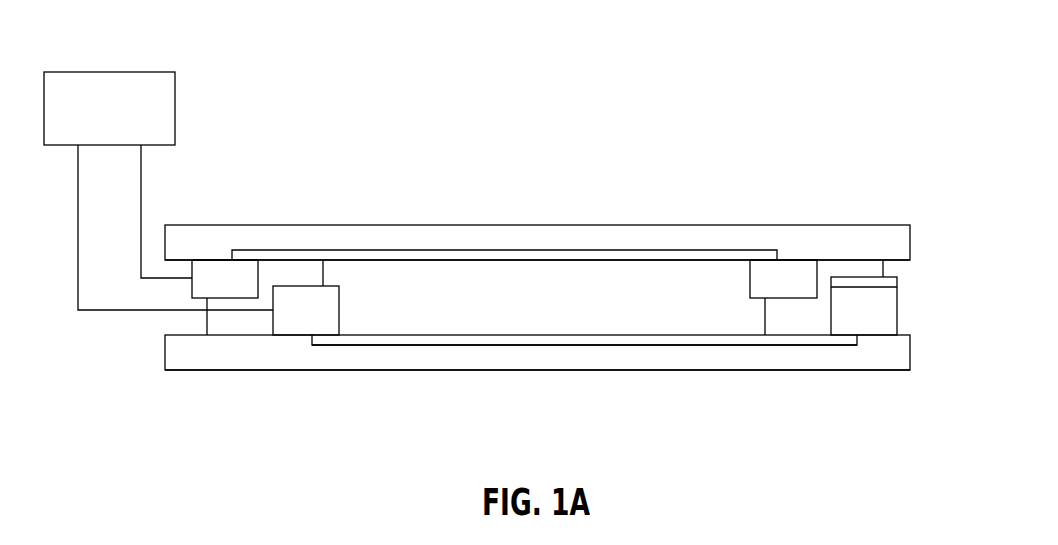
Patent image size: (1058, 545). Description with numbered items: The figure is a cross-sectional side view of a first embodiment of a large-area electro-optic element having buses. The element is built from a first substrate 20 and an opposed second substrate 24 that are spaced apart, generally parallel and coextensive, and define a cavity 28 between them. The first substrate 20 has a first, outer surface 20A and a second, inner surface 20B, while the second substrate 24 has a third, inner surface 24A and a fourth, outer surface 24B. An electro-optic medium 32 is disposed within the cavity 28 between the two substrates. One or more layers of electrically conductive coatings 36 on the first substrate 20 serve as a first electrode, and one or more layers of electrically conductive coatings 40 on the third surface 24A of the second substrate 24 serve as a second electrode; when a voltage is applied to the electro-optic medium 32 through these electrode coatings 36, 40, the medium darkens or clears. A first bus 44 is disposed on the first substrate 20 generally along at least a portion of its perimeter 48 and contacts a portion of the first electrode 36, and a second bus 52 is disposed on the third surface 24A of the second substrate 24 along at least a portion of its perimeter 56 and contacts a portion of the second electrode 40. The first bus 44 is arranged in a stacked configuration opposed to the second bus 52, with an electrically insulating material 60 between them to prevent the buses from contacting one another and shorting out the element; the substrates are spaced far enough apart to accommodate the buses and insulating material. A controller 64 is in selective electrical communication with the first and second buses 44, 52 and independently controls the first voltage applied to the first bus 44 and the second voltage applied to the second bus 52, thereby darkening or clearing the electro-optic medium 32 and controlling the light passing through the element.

The first substrate 20 is at (435, 235).
The first, outer surface 20A is at (463, 225).
The second, inner surface 20B is at (510, 250).
The second substrate 24 is at (682, 353).
The third, inner surface 24A is at (712, 335).
The fourth, outer surface 24B is at (737, 370).
The cavity 28 is at (510, 306).
The electro-optic medium 32 is at (570, 268).
The electrically conductive coating 36 is at (360, 252).
The electrically conductive coating 40 is at (380, 345).
The first bus 44 is at (203, 270).
The perimeter 48 is at (218, 257).
The second bus 52 is at (295, 318).
The perimeter 56 is at (870, 333).
The electrically insulating material 60 is at (285, 275).
The controller 64 is at (148, 70).